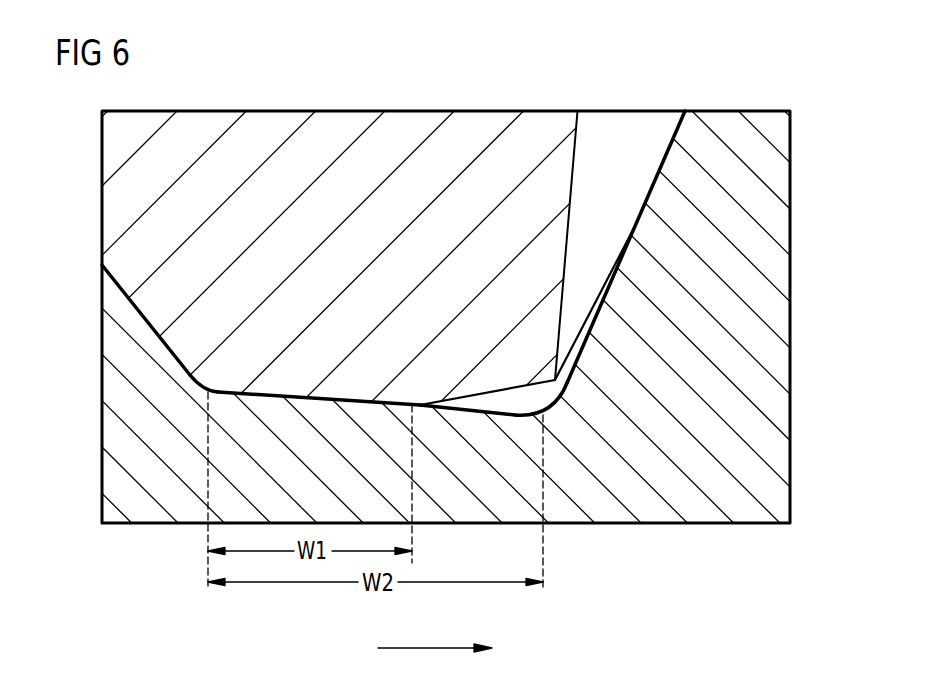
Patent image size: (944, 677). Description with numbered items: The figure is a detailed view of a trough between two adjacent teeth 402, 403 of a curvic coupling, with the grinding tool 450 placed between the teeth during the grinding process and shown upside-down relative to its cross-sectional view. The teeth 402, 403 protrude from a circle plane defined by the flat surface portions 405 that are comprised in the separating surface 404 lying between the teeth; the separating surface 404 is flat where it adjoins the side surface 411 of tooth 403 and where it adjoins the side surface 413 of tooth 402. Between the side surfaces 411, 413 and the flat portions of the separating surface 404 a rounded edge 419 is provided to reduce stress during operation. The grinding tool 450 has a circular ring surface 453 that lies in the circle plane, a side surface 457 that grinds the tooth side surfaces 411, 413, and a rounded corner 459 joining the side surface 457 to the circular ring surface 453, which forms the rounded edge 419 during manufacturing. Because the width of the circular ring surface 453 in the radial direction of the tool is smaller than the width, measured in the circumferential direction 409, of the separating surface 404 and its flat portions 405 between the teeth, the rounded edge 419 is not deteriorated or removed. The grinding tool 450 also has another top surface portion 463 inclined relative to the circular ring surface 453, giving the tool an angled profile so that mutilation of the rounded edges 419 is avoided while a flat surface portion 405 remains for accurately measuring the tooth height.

The tooth 402 is at (725, 122).
The tooth 403 is at (123, 320).
The separating surface 404 is at (497, 412).
The flat surface portion 405 is at (512, 412).
The circumferential direction 409 is at (425, 647).
The side surface 411 is at (136, 303).
The side surface 413 is at (596, 318).
The rounded edge 419 is at (193, 382).
The grinding tool 450 is at (477, 120).
The circular ring surface 453 is at (328, 403).
The side surface 457 is at (153, 335).
The rounded corner 459 is at (209, 393).
The other top surface portion 463 is at (477, 396).